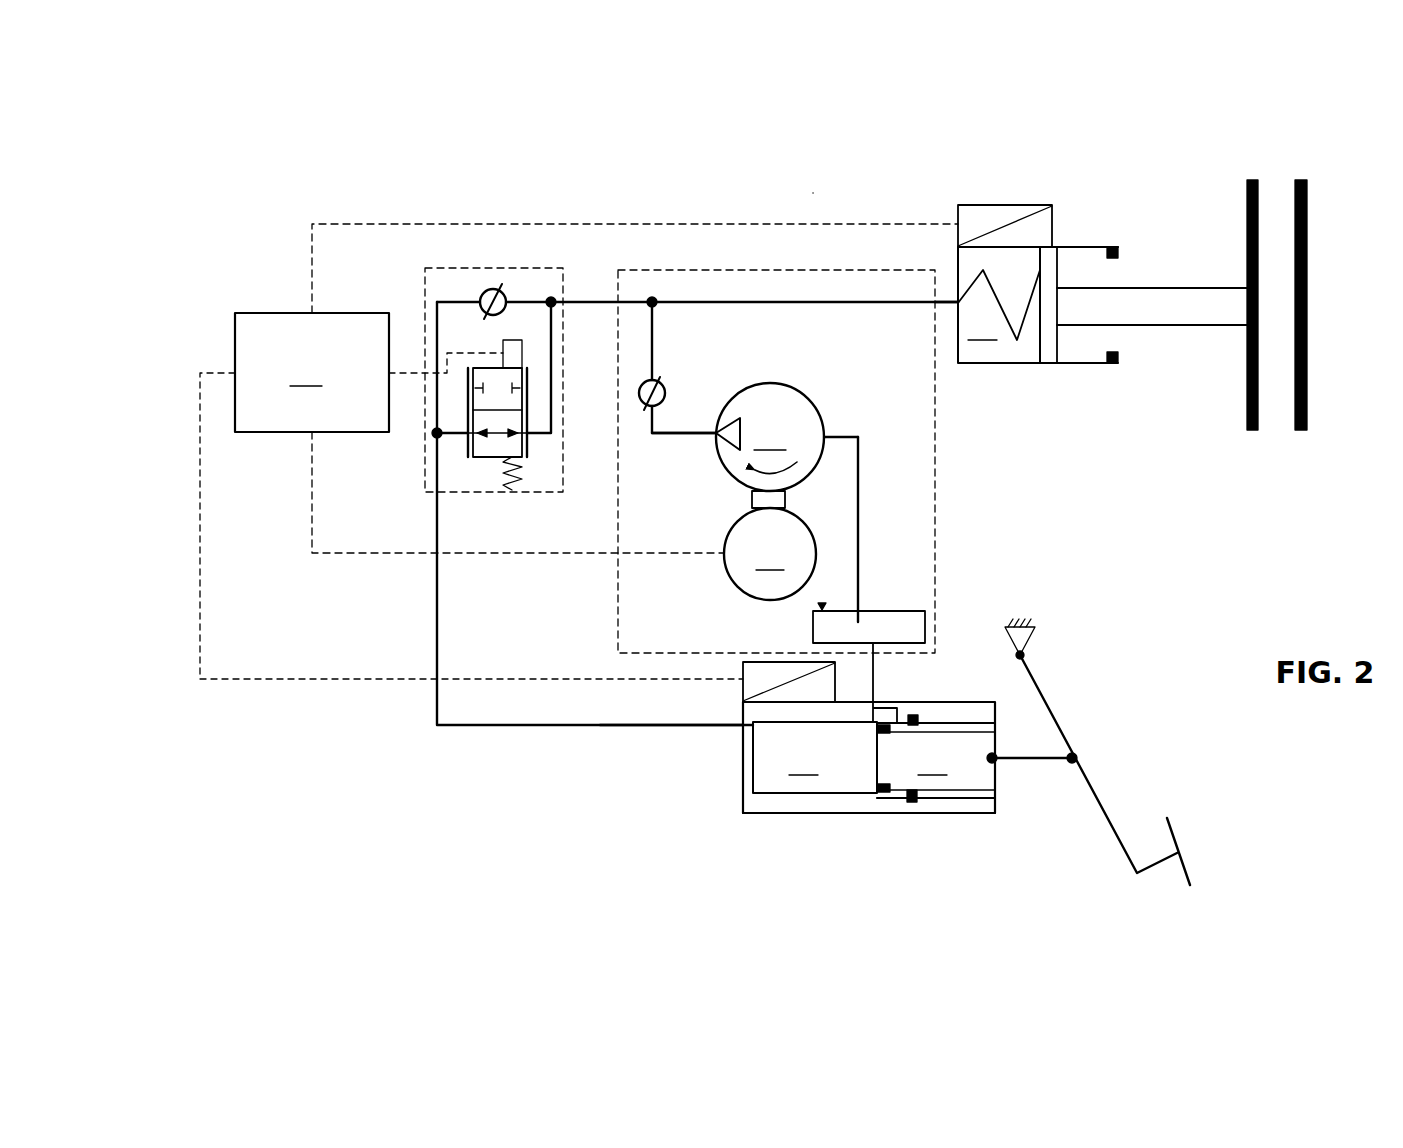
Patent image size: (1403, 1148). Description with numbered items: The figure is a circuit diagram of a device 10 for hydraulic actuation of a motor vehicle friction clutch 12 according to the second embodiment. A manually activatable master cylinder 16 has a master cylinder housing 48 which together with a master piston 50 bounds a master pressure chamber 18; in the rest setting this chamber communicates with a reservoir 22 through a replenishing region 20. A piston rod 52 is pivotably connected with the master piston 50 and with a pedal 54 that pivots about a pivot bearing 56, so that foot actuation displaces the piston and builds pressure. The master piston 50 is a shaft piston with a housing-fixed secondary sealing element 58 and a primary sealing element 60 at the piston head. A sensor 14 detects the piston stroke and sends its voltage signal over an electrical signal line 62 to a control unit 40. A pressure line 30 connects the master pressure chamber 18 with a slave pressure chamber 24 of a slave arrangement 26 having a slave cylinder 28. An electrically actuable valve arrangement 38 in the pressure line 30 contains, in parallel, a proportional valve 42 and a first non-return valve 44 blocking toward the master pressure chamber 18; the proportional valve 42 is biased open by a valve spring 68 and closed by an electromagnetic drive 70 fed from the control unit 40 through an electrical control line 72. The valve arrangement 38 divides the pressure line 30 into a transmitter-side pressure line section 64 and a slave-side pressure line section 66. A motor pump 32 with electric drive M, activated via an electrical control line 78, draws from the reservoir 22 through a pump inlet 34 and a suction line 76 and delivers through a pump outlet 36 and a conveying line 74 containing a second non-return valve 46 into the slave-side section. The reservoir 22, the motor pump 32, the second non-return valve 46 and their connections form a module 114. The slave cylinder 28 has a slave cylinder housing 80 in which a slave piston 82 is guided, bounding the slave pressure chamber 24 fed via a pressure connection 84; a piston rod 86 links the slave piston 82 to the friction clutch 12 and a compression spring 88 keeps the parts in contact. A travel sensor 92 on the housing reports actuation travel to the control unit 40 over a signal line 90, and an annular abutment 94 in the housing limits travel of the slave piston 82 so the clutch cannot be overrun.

The device for hydraulic actuation 10 is at (813, 193).
The motor vehicle friction clutch 12 is at (1271, 185).
The sensor 14 is at (752, 662).
The master cylinder 16 is at (920, 815).
The master pressure chamber 18 is at (815, 757).
The replenishing region 20 is at (880, 712).
The reservoir 22 is at (886, 632).
The slave pressure chamber 24 is at (983, 324).
The slave arrangement 26 is at (1081, 205).
The slave cylinder 28 is at (1036, 366).
The pressure line 30 is at (537, 729).
The motor pump 32 is at (770, 437).
The pump inlet 34 is at (824, 437).
The pump outlet 36 is at (716, 433).
The valve arrangement 38 is at (420, 474).
The control unit 40 is at (312, 372).
The proportional valve 42 is at (483, 459).
The first non-return valve 44 is at (496, 300).
The second non-return valve 46 is at (655, 383).
The master cylinder housing 48 is at (822, 813).
The master piston 50 is at (936, 760).
The piston rod 52 is at (1020, 760).
The pedal 54 is at (1096, 796).
The pivot bearing 56 is at (1024, 658).
The secondary sealing element 58 is at (915, 800).
The primary sealing element 60 is at (886, 795).
The electrical signal line 62 is at (530, 679).
The transmitter-side pressure line section 64 is at (678, 727).
The slave-side pressure line section 66 is at (722, 300).
The valve spring 68 is at (516, 486).
The electromagnetic drive 70 is at (515, 352).
The electrical control line 72 is at (403, 373).
The conveying line 74 is at (690, 435).
The suction line 76 is at (858, 491).
The electrical control line 78 is at (683, 553).
The slave cylinder housing 80 is at (1015, 363).
The slave piston 82 is at (1053, 262).
The pressure connection 84 is at (955, 308).
The piston rod 86 is at (1185, 302).
The compression spring 88 is at (1004, 306).
The signal line 90 is at (845, 224).
The travel sensor 92 is at (988, 205).
The abutment 94 is at (1120, 362).
The module 114 is at (935, 520).